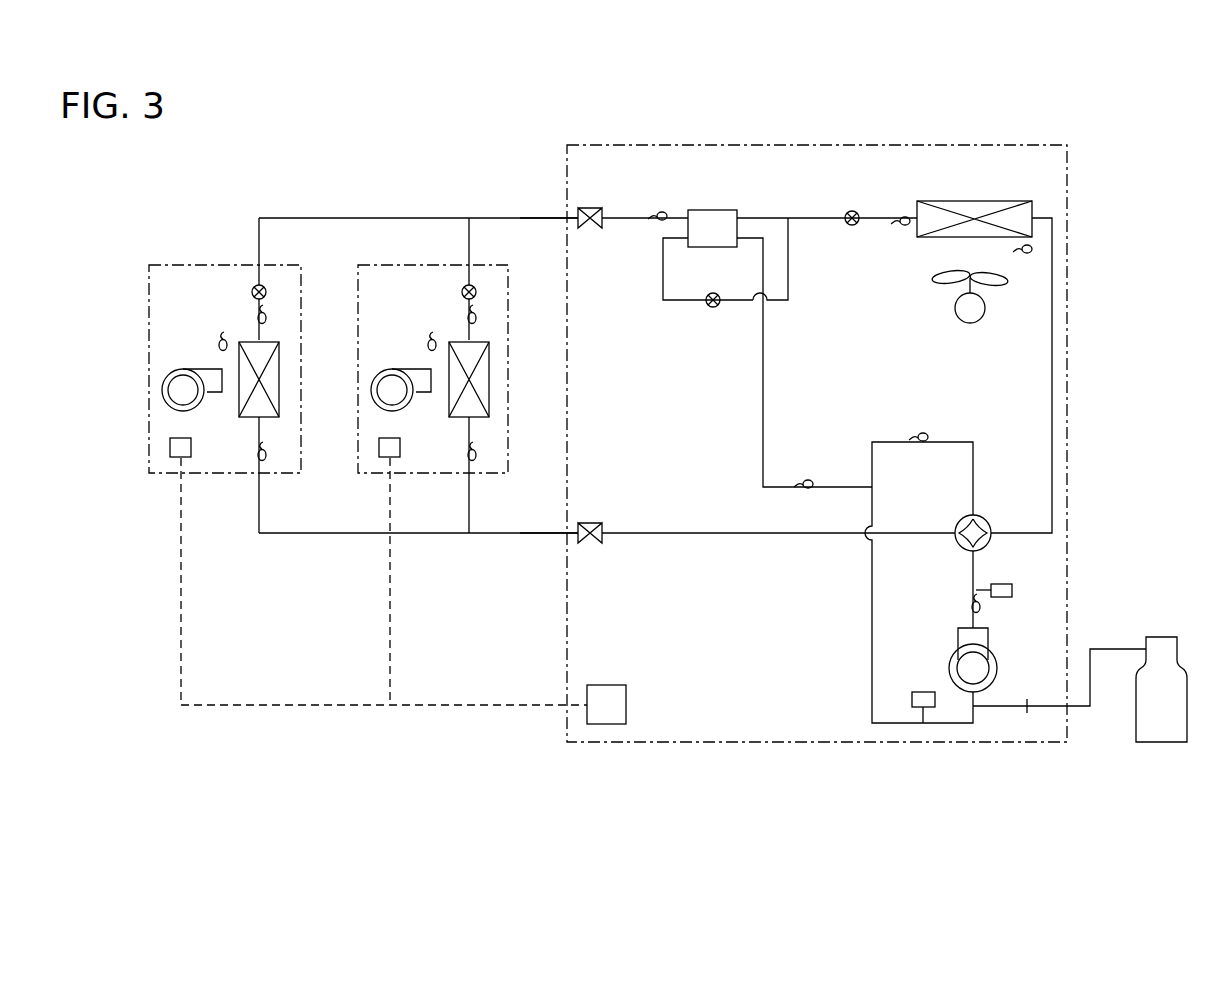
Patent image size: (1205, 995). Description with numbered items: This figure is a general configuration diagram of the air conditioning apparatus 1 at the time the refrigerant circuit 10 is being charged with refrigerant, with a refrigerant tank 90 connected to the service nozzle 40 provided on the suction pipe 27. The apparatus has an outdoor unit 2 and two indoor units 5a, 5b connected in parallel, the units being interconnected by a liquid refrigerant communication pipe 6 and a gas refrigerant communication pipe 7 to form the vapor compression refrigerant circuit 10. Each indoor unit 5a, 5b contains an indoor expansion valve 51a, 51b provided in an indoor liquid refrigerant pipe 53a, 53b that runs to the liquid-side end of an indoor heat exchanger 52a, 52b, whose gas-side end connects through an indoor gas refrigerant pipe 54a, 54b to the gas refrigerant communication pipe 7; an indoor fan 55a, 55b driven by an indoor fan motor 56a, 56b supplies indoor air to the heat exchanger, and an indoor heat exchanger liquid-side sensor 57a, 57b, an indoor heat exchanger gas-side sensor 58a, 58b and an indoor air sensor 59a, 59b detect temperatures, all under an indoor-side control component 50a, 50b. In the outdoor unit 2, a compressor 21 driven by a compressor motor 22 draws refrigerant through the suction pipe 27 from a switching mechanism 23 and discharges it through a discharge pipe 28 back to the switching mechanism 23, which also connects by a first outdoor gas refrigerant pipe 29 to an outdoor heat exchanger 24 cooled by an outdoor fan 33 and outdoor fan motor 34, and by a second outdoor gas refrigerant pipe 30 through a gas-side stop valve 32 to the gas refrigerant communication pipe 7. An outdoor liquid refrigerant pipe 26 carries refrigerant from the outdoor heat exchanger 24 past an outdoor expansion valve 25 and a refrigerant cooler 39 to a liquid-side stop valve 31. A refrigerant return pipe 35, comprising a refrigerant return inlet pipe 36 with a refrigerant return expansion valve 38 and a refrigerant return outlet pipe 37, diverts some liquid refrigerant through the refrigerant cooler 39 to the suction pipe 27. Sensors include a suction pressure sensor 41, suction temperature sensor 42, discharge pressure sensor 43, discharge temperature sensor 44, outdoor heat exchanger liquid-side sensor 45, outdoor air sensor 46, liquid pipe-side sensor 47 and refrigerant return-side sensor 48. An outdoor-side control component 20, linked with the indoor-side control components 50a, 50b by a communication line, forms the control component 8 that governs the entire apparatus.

The air conditioning apparatus 1 is at (1070, 178).
The outdoor unit 2 is at (1011, 145).
The indoor unit 5a is at (303, 287).
The indoor unit 5b is at (512, 287).
The liquid refrigerant communication pipe 6 is at (500, 216).
The gas refrigerant communication pipe 7 is at (540, 531).
The control component 8 is at (437, 697).
The refrigerant circuit 10 is at (540, 202).
The outdoor-side control component 20 is at (607, 683).
The compressor 21 is at (1005, 660).
The compressor motor 22 is at (992, 668).
The switching mechanism 23 is at (988, 518).
The outdoor heat exchanger 24 is at (975, 201).
The outdoor expansion valve 25 is at (852, 210).
The outdoor liquid refrigerant pipe 26 is at (825, 222).
The suction pipe 27 is at (870, 633).
The discharge pipe 28 is at (968, 575).
The first outdoor gas refrigerant pipe 29 is at (1049, 380).
The second outdoor gas refrigerant pipe 30 is at (752, 537).
The liquid-side stop valve 31 is at (592, 230).
The gas-side stop valve 32 is at (593, 547).
The outdoor fan 33 is at (946, 284).
The outdoor fan motor 34 is at (986, 308).
The refrigerant return pipe 35 is at (687, 301).
The refrigerant return inlet pipe 36 is at (790, 265).
The refrigerant return outlet pipe 37 is at (761, 405).
The refrigerant return expansion valve 38 is at (713, 310).
The refrigerant cooler 39 is at (712, 210).
The service nozzle 40 is at (1000, 708).
The suction pressure sensor 41 is at (923, 692).
The suction temperature sensor 42 is at (929, 435).
The discharge pressure sensor 43 is at (1013, 591).
The discharge temperature sensor 44 is at (982, 610).
The outdoor heat exchanger liquid-side sensor 45 is at (904, 228).
The outdoor air sensor 46 is at (1028, 254).
The liquid pipe-side sensor 47 is at (660, 212).
The refrigerant return-side sensor 48 is at (814, 482).
The indoor-side control component 50a is at (175, 458).
The indoor-side control component 50b is at (384, 458).
The indoor expansion valve 51a is at (251, 292).
The indoor expansion valve 51b is at (461, 292).
The indoor heat exchanger 52a is at (280, 378).
The indoor heat exchanger 52b is at (490, 378).
The indoor liquid refrigerant pipe 53a is at (262, 289).
The indoor liquid refrigerant pipe 53b is at (471, 289).
The indoor gas refrigerant pipe 54a is at (262, 435).
The indoor gas refrigerant pipe 54b is at (472, 435).
The indoor fan 55a is at (208, 398).
The indoor fan 55b is at (417, 398).
The indoor fan motor 56a is at (173, 412).
The indoor fan motor 56b is at (383, 412).
The indoor heat exchanger liquid-side sensor 57a is at (268, 318).
The indoor heat exchanger liquid-side sensor 57b is at (478, 318).
The indoor heat exchanger gas-side sensor 58a is at (268, 455).
The indoor heat exchanger gas-side sensor 58b is at (478, 455).
The indoor air sensor 59a is at (218, 342).
The indoor air sensor 59b is at (427, 342).
The refrigerant tank 90 is at (1164, 636).